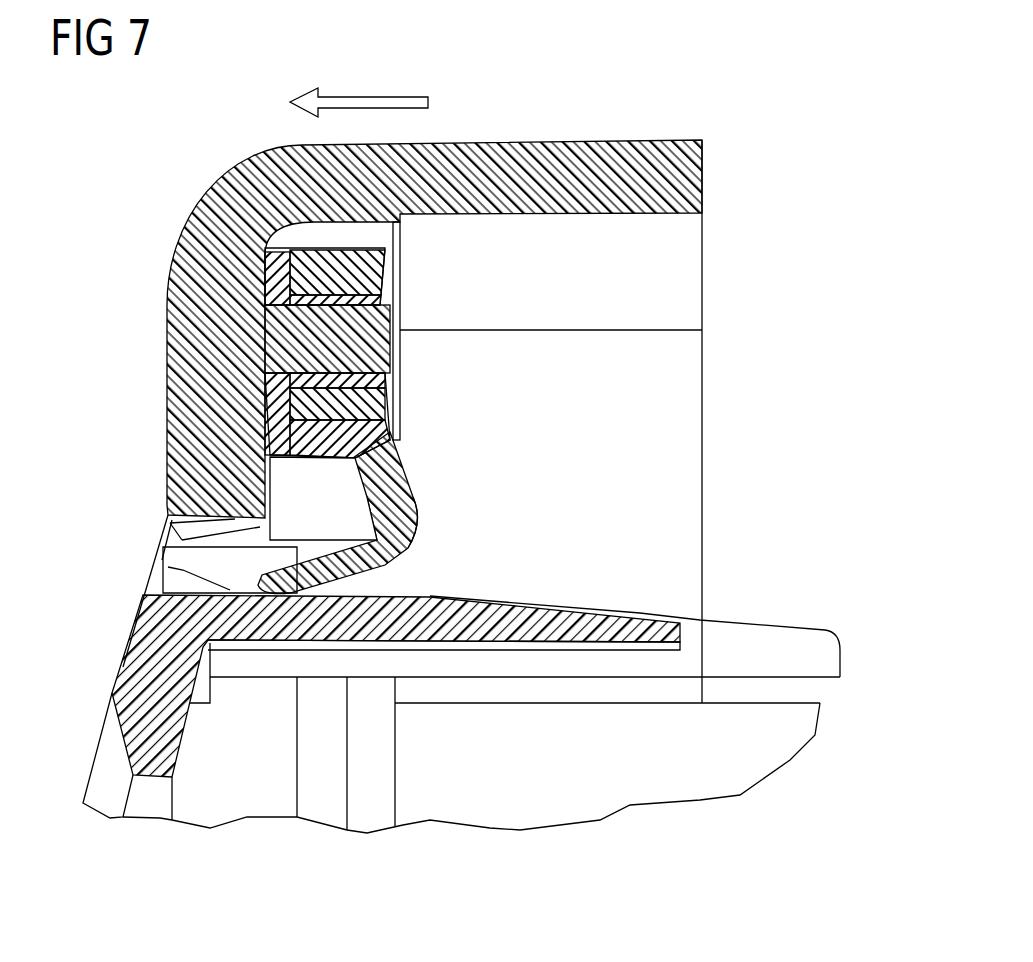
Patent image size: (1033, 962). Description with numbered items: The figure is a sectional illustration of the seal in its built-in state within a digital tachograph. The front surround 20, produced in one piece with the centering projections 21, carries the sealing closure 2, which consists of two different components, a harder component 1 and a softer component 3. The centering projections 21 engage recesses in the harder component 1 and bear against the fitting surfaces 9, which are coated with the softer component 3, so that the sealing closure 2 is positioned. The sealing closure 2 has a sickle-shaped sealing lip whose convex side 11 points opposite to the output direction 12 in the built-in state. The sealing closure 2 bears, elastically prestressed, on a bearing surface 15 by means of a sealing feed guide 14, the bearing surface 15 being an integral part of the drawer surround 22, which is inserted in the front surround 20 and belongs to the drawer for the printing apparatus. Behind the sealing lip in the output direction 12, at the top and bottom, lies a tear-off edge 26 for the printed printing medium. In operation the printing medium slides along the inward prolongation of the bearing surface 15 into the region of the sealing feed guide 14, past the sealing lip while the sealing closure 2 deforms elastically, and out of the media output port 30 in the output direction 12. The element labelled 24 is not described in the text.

The harder component 1 is at (380, 290).
The sealing closure 2 is at (397, 484).
The softer component 3 is at (347, 388).
The fitting surface 9 is at (313, 360).
The convex side 11 is at (417, 500).
The output direction 12 is at (368, 100).
The sealing feed guide 14 is at (272, 575).
The bearing surface 15 is at (444, 645).
The front surround 20 is at (190, 258).
The centering projections 21 is at (367, 345).
The drawer surround 22 is at (128, 735).
The support plate 24 is at (401, 246).
The tear-off edge 26 is at (175, 548).
The media output port 30 is at (150, 522).